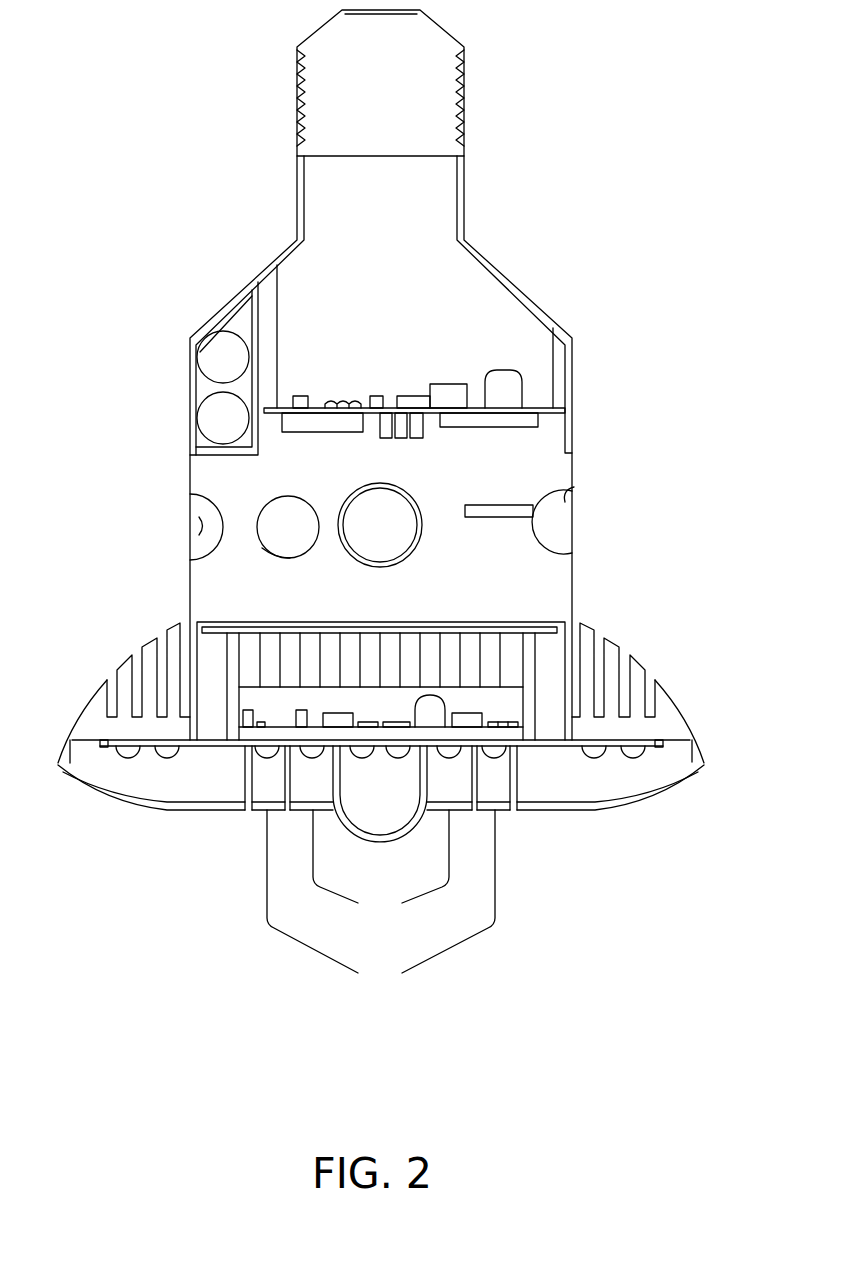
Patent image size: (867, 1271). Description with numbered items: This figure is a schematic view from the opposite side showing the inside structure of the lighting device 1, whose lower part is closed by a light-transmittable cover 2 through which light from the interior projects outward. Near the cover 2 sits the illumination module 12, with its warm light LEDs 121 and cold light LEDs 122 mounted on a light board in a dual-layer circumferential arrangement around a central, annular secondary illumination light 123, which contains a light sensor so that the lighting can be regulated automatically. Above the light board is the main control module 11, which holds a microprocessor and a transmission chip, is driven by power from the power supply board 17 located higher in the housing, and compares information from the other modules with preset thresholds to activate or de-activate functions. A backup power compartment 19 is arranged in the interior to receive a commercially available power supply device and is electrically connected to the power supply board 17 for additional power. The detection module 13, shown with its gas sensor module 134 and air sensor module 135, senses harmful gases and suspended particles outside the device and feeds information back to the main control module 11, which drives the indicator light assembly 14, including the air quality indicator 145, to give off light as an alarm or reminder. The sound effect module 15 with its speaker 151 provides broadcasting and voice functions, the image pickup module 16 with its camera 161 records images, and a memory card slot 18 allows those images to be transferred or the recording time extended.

The lighting device 1 is at (468, 170).
The cover 2 is at (152, 812).
The main control module 11 is at (532, 658).
The illumination module 12 is at (645, 756).
The warm light LED 121 is at (157, 763).
The cold light LED 122 is at (118, 762).
The secondary illumination light 123 is at (338, 833).
The detection module 13 is at (259, 513).
The gas sensor module 134 is at (203, 523).
The air sensor module 135 is at (267, 552).
The indicator light assembly 14 is at (381, 903).
The air quality indicator 145 is at (381, 869).
The sound effect module 15 is at (570, 537).
The speaker 151 is at (570, 492).
The image pickup module 16 is at (408, 487).
The camera 161 is at (350, 497).
The power supply board 17 is at (533, 406).
The memory card slot 18 is at (498, 517).
The backup power compartment 19 is at (214, 324).